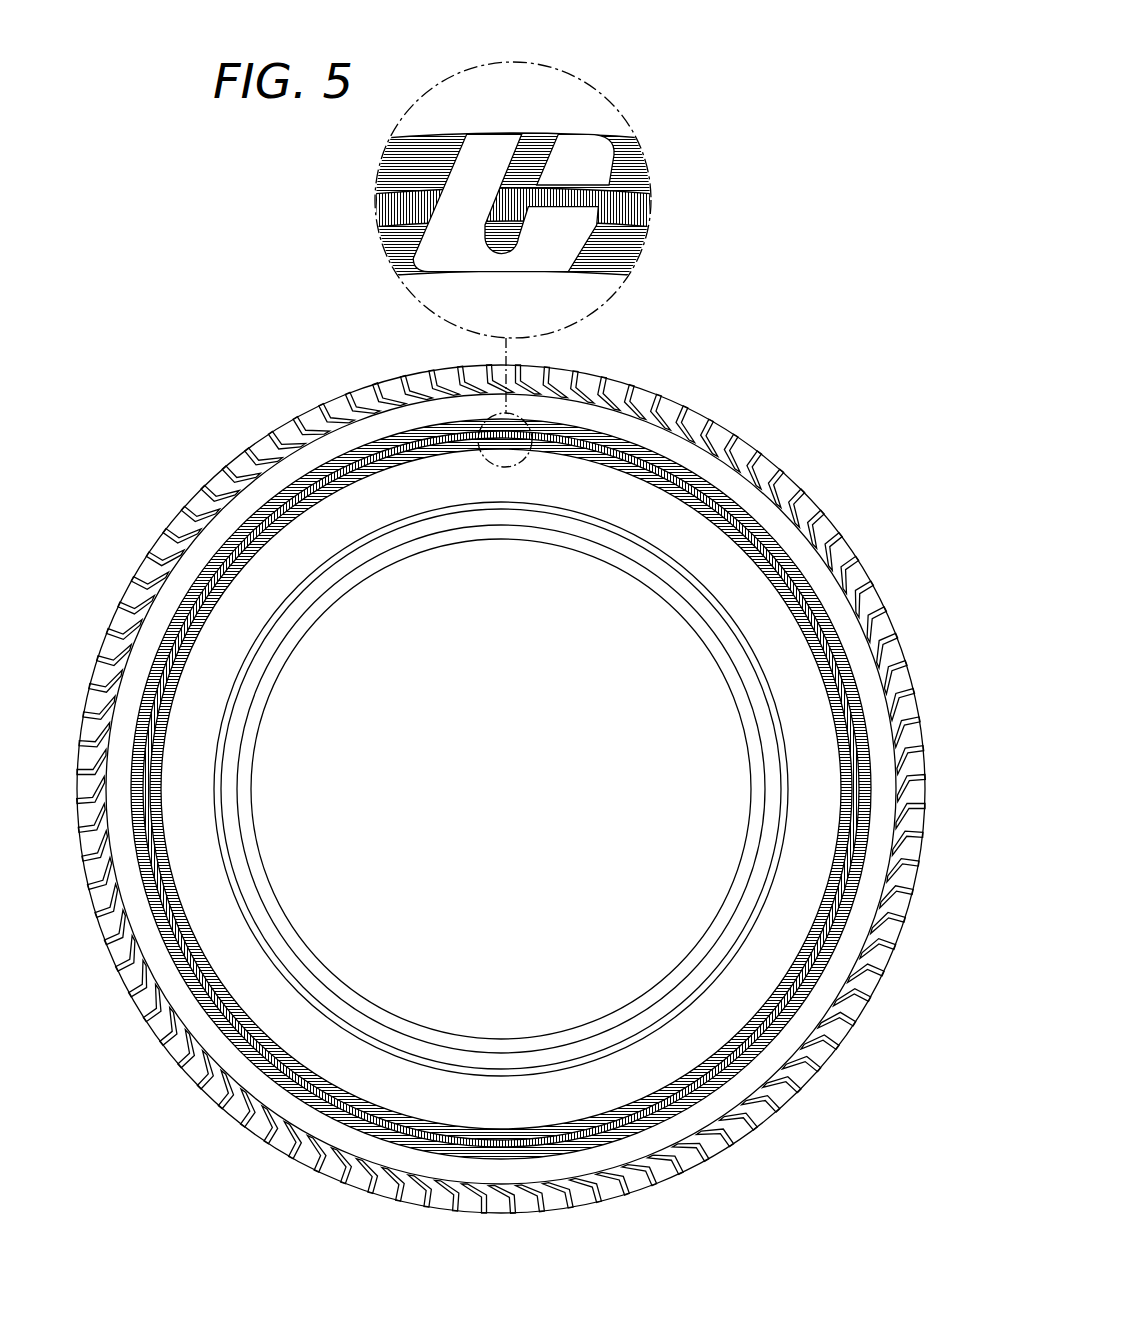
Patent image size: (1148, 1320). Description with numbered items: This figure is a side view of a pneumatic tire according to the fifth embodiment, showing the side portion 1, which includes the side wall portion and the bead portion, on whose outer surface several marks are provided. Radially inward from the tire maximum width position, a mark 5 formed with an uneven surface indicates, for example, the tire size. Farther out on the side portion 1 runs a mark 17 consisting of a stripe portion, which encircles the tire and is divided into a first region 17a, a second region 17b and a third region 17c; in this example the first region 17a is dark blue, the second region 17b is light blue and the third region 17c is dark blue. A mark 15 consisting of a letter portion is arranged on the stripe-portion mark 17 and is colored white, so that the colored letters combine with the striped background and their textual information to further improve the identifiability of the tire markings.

The side portion 1 is at (774, 523).
The mark 5 is at (489, 512).
The mark consisting of a letter portion 15 is at (489, 145).
The mark consisting of a stripe portion 17 is at (538, 646).
The first region 17a is at (793, 567).
The second region 17b is at (810, 593).
The third region 17c is at (818, 620).